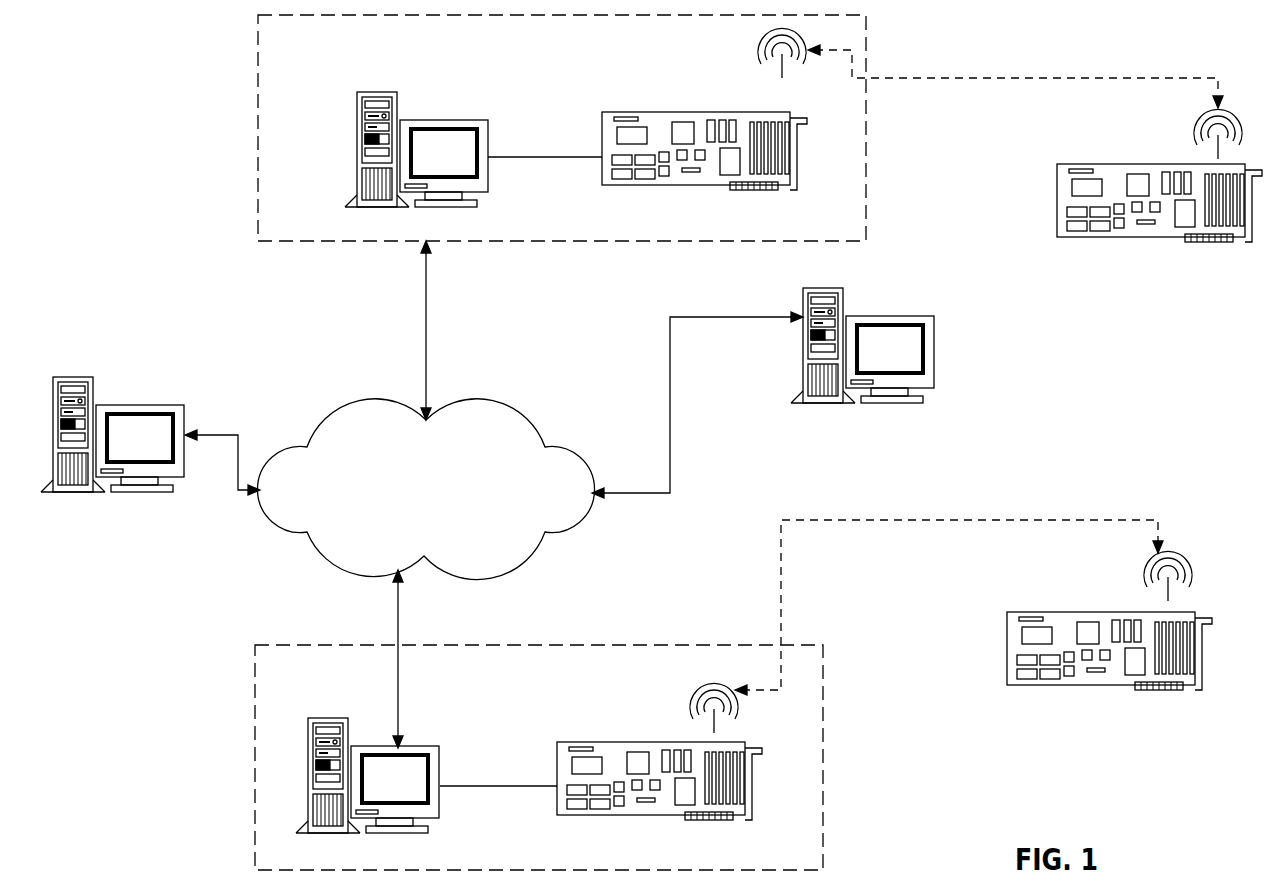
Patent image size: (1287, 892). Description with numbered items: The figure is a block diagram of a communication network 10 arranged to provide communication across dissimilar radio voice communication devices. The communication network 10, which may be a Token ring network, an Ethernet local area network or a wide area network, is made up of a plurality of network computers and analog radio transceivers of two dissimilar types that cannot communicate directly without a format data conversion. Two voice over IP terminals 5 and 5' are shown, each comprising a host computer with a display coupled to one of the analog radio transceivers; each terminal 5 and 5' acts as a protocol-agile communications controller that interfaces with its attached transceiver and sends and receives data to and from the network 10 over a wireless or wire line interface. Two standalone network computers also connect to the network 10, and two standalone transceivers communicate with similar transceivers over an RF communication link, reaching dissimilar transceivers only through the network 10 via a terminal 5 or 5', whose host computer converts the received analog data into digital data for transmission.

The voice over IP terminal 5 is at (588, 128).
The voice over IP terminal 5' is at (571, 757).
The communication network 10 is at (561, 447).